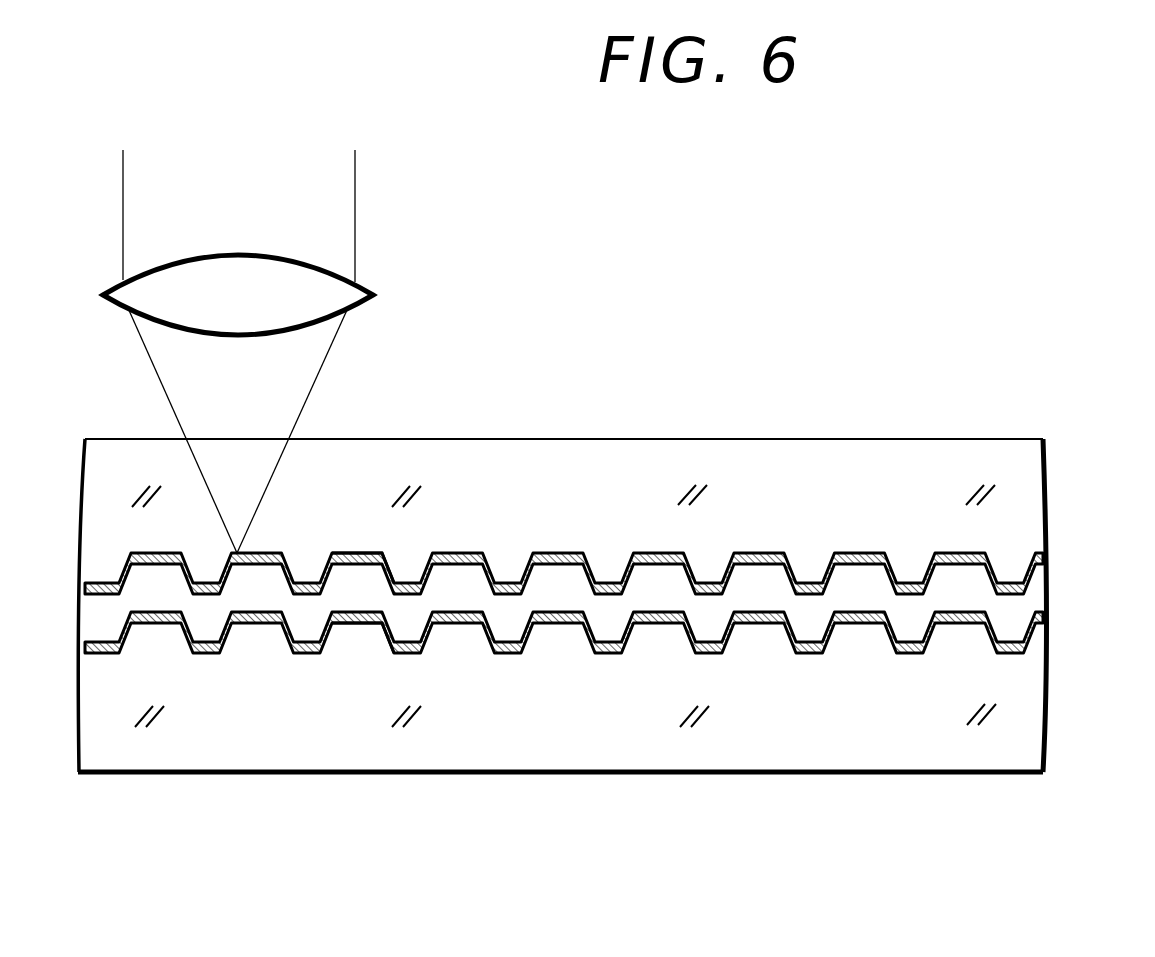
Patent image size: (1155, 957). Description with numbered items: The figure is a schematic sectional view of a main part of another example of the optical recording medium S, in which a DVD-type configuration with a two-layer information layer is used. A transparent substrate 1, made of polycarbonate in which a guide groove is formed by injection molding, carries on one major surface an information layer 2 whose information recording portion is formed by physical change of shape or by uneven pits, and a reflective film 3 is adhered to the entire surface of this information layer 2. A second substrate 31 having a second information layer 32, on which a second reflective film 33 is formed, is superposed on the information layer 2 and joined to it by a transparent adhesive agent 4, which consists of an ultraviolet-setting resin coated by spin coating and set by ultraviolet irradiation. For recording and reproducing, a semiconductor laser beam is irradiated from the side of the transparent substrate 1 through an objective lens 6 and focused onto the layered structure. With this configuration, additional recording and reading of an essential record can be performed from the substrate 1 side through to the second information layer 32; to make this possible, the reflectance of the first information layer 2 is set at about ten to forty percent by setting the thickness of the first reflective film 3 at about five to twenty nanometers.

The transparent substrate 1 is at (757, 437).
The information layer 2 is at (575, 552).
The reflective film 3 is at (375, 552).
The adhesive agent 4 is at (1002, 605).
The objective lens 6 is at (366, 284).
The second substrate 31 is at (946, 735).
The second information layer 32 is at (777, 654).
The second reflective film 33 is at (399, 654).
The optical recording medium S is at (913, 325).